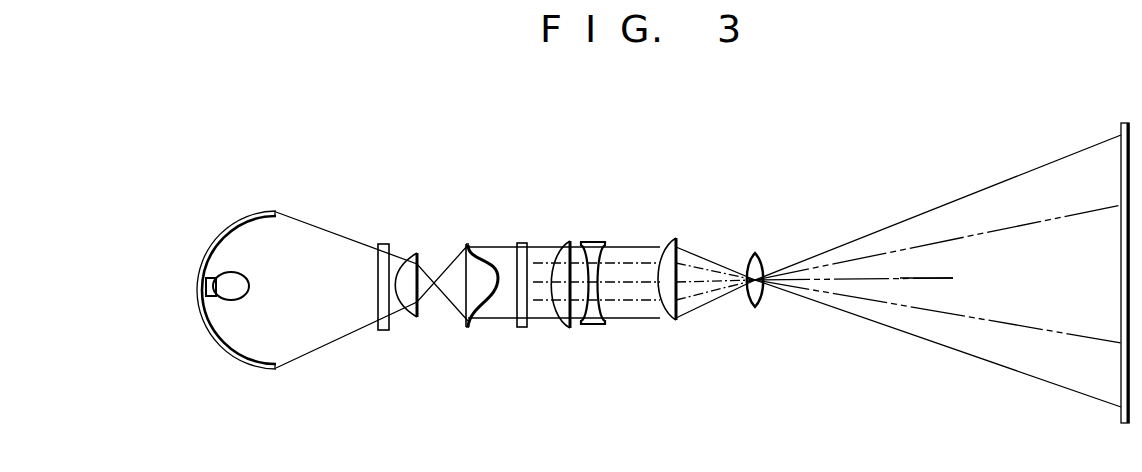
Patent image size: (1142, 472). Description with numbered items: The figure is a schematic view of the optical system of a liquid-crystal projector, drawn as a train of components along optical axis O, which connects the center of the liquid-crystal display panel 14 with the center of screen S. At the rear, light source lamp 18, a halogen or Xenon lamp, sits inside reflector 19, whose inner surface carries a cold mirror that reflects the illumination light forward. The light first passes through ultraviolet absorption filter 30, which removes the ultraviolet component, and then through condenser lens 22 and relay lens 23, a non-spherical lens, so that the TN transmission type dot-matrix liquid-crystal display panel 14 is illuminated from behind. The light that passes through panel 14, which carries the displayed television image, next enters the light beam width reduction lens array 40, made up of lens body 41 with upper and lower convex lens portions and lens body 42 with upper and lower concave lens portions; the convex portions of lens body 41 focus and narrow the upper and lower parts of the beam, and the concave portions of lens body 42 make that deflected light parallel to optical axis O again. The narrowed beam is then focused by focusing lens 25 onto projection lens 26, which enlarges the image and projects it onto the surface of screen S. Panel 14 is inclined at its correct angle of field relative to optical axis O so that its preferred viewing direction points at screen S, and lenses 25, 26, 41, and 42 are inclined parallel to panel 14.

The light source lamp 18 is at (250, 286).
The reflector 19 is at (270, 210).
The ultraviolet absorption filter 30 is at (383, 243).
The condenser lens 22 is at (416, 252).
The relay lens 23 is at (467, 244).
The liquid-crystal display panel 14 is at (521, 242).
The light beam width reduction lens array 40 is at (622, 190).
The lens body 41 is at (563, 242).
The lens body 42 is at (594, 241).
The focusing lens 25 is at (672, 238).
The projection lens 26 is at (756, 252).
The screen S is at (1120, 257).
The optical axis O is at (927, 277).